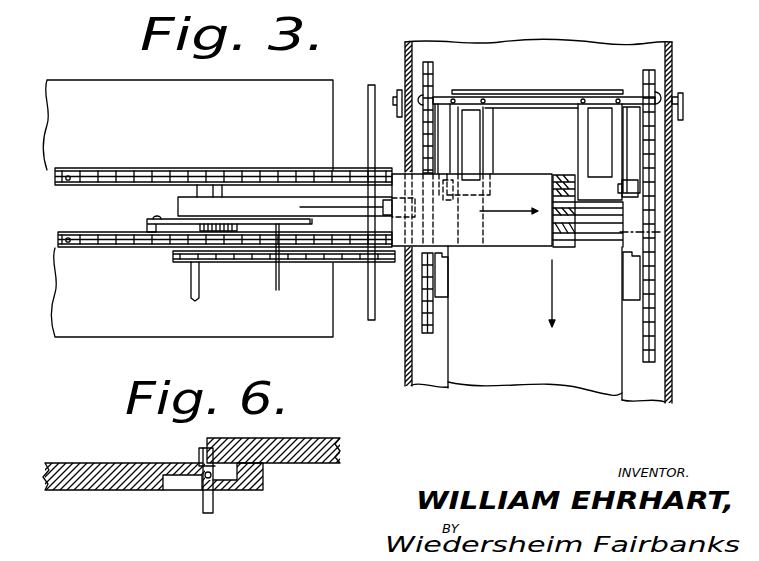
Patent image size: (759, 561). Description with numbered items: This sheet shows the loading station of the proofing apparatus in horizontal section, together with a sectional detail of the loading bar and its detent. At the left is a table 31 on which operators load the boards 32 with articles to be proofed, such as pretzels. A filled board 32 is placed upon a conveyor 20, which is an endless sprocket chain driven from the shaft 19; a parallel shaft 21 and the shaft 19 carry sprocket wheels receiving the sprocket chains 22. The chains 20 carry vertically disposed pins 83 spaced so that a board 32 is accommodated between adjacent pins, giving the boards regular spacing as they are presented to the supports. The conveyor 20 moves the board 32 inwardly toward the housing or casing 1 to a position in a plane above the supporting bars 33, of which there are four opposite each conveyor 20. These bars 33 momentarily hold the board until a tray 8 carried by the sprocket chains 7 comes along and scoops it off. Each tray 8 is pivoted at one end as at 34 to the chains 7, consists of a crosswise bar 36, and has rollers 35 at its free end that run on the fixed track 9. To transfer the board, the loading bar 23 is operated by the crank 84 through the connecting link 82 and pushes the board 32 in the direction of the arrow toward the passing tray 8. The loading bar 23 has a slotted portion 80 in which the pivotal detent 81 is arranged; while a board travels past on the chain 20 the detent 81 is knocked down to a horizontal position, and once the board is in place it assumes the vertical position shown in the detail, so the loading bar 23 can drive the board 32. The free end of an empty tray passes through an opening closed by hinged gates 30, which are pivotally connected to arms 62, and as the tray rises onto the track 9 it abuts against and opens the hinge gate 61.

In FIG. 3, the housing or casing 1 is at (668, 292).
In FIG. 3, the sprocket chains 7 is at (428, 62).
In FIG. 3, the tray 8 is at (531, 140).
In FIG. 3, the fixed track 9 is at (643, 52).
In FIG. 3, the shaft 19 is at (368, 100).
In FIG. 3, the sprocket chains (conveyor) 20 is at (92, 160).
In FIG. 3, the shaft 21 is at (192, 284).
In FIG. 3, the sprocket chains 22 is at (266, 261).
In FIG. 3, the loading bar 23 is at (291, 196).
In FIG. 6, the loading bar 23 is at (93, 477).
In FIG. 3, the hinged gates 30 is at (443, 130).
In FIG. 3, the table 31 is at (90, 90).
In FIG. 3, the board 32 is at (522, 169).
In FIG. 6, the board 32 is at (290, 435).
In FIG. 3, the supporting bars 33 is at (590, 214).
In FIG. 3, the pivot of tray 34 is at (420, 100).
In FIG. 3, the rollers 35 is at (447, 200).
In FIG. 3, the bar of tray 36 is at (533, 85).
In FIG. 3, the hinge gate 61 is at (448, 280).
In FIG. 3, the arms 62 is at (397, 110).
In FIG. 6, the slotted portion 80 is at (154, 511).
In FIG. 3, the pivotal detent 81 is at (384, 208).
In FIG. 6, the pivotal detent 81 is at (213, 504).
In FIG. 3, the connecting link 82 is at (279, 272).
In FIG. 3, the pins 83 is at (220, 184).
In FIG. 3, the crank 84 is at (147, 228).